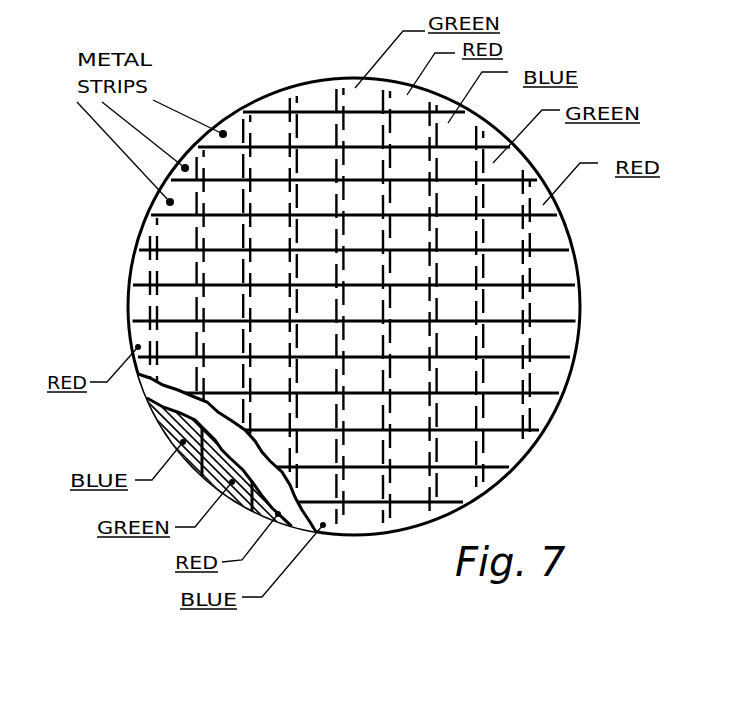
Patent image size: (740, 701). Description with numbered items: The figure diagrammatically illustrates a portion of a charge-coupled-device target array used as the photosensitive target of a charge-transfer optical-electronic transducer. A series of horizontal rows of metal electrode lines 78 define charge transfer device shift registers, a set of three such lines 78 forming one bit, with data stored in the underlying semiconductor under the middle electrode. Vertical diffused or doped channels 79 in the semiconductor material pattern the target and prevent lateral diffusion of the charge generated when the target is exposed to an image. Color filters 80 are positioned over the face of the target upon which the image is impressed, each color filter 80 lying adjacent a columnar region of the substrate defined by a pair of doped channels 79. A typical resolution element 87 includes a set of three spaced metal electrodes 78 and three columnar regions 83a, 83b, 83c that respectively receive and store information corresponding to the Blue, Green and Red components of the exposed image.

The metal electrode lines 78 is at (553, 235).
The doped channels 79 is at (342, 523).
The color filters 80 is at (117, 371).
The columnar region 83a is at (168, 311).
The columnar region 83b is at (222, 302).
The columnar region 83c is at (265, 312).
The resolution element 87 is at (150, 240).